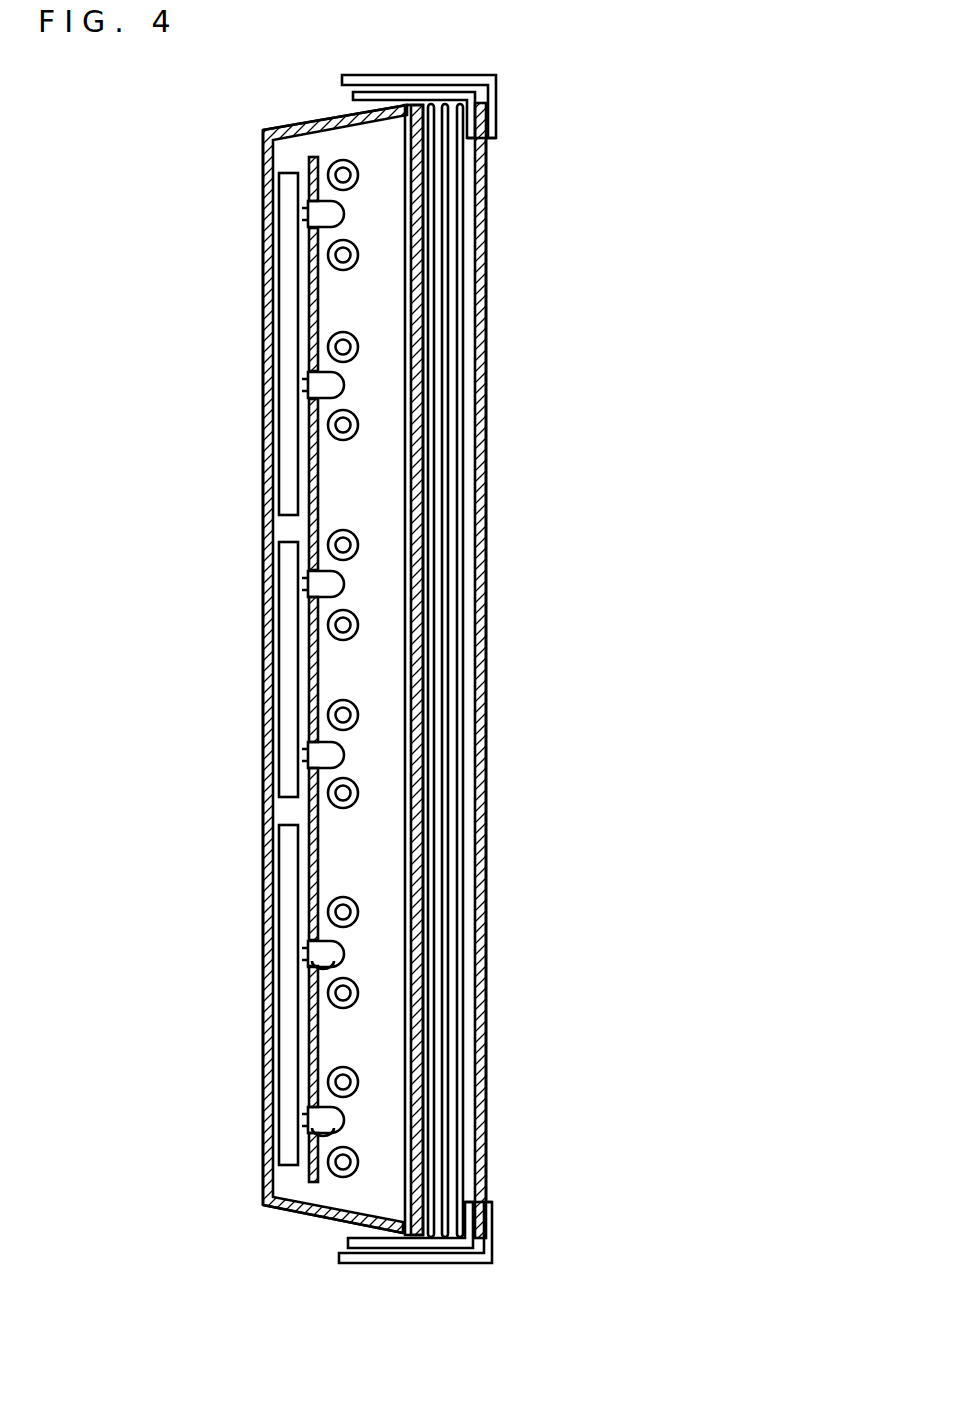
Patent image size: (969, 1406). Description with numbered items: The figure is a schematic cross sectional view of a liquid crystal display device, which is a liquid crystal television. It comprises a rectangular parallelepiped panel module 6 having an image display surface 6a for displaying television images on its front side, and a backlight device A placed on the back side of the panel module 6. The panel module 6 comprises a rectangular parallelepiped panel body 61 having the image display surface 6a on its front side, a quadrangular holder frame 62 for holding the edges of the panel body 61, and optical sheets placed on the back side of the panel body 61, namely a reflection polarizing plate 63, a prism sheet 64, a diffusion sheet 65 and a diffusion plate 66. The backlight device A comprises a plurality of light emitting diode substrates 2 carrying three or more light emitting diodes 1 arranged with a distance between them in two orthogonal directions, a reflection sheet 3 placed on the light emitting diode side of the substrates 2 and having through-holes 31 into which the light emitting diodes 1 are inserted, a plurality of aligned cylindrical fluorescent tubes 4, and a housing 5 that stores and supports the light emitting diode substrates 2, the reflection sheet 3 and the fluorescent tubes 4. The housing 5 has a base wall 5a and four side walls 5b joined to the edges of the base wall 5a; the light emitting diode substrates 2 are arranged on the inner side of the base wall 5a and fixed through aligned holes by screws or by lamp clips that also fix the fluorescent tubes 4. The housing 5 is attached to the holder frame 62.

The light emitting diode 1 is at (345, 212).
The light emitting diode substrate 2 is at (287, 270).
The reflection sheet 3 is at (314, 1020).
The through-hole 31 is at (333, 967).
The cylindrical fluorescent tube 4 is at (358, 545).
The housing 5 is at (264, 880).
The base wall 5a is at (263, 1182).
The side wall 5b is at (313, 122).
The panel module 6 is at (466, 713).
The image display surface 6a is at (487, 614).
The panel body 61 is at (483, 888).
The holder frame 62 is at (403, 1243).
The reflection polarizing plate 63 is at (462, 812).
The prism sheet 64 is at (447, 765).
The diffusion sheet 65 is at (430, 713).
The diffusion plate 66 is at (410, 660).
The backlight device A is at (252, 1212).